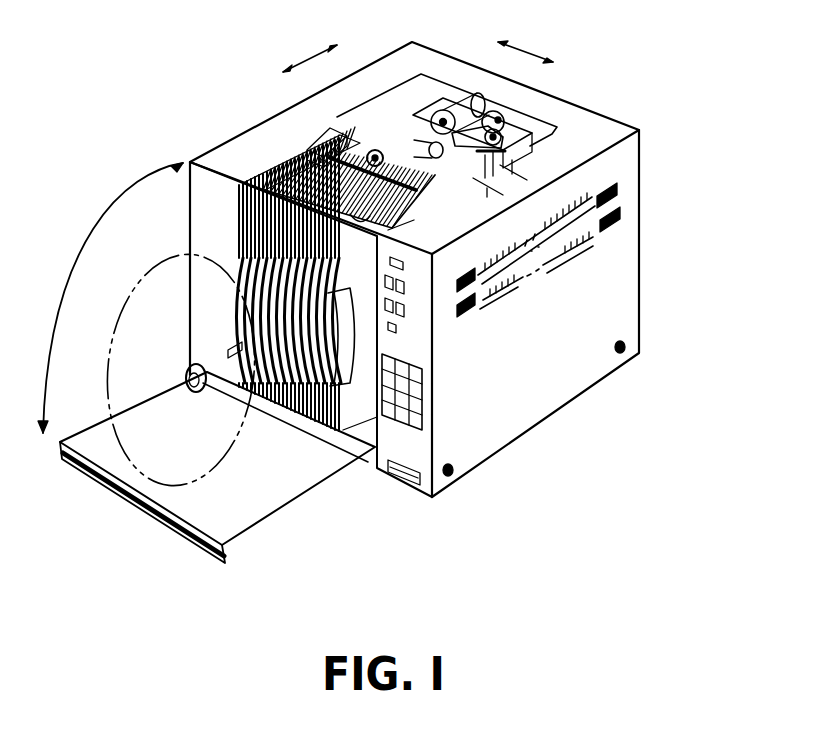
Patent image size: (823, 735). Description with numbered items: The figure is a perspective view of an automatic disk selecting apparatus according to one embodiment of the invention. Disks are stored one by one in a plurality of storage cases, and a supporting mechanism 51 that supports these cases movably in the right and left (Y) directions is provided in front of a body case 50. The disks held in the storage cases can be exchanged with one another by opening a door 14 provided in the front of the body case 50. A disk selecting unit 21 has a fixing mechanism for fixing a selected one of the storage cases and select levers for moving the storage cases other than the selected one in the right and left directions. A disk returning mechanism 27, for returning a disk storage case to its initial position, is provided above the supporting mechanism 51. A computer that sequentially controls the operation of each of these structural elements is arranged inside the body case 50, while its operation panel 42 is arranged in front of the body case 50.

The door 14 is at (273, 523).
The disk selecting unit 21 is at (520, 122).
The disk returning mechanism 27 is at (380, 120).
The operation panel 42 is at (420, 410).
The body case 50 is at (642, 270).
The supporting mechanism 51 is at (283, 138).